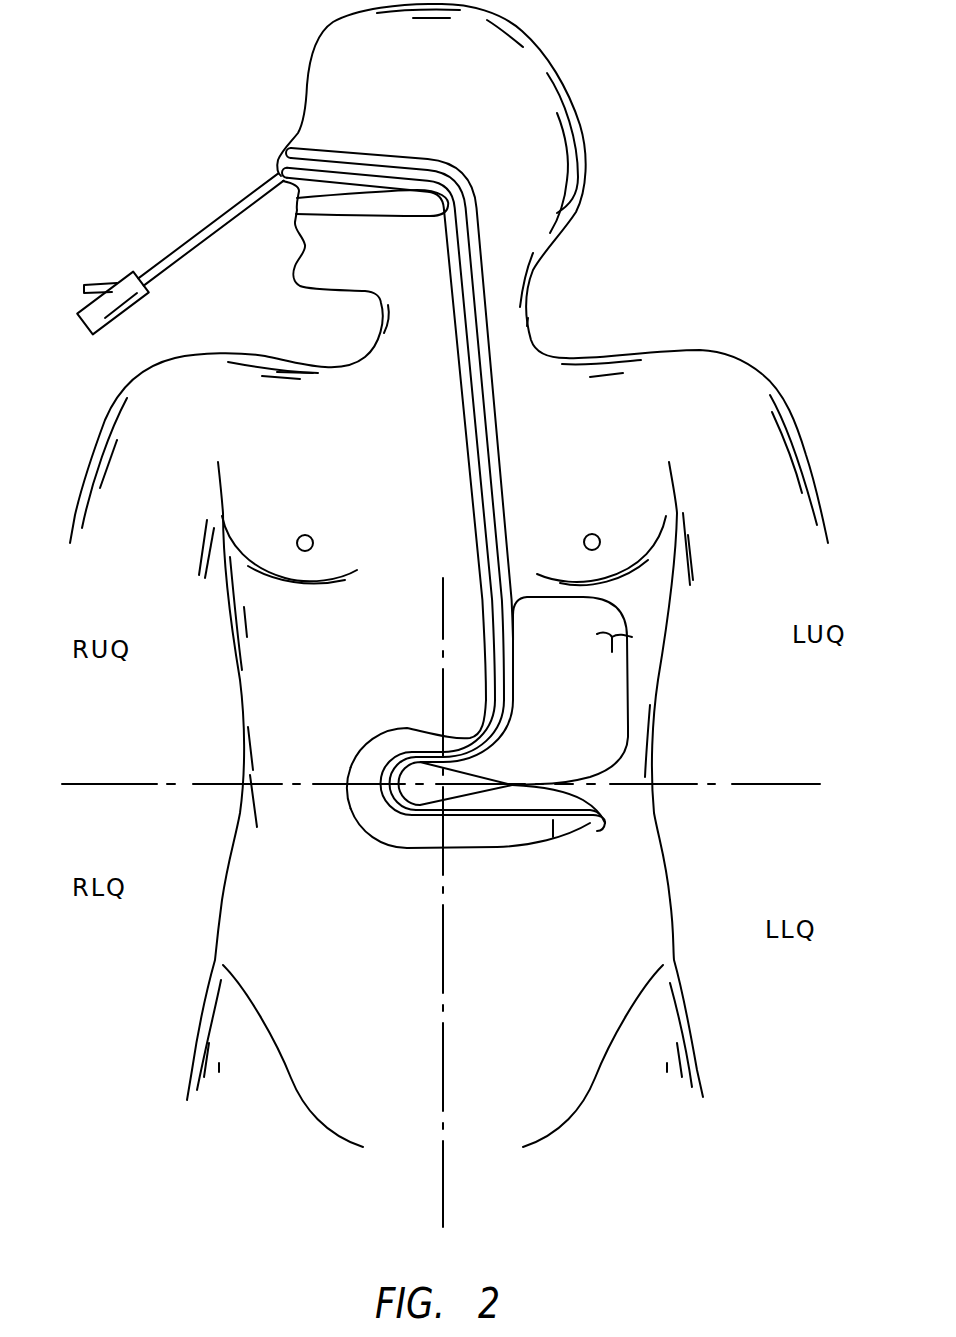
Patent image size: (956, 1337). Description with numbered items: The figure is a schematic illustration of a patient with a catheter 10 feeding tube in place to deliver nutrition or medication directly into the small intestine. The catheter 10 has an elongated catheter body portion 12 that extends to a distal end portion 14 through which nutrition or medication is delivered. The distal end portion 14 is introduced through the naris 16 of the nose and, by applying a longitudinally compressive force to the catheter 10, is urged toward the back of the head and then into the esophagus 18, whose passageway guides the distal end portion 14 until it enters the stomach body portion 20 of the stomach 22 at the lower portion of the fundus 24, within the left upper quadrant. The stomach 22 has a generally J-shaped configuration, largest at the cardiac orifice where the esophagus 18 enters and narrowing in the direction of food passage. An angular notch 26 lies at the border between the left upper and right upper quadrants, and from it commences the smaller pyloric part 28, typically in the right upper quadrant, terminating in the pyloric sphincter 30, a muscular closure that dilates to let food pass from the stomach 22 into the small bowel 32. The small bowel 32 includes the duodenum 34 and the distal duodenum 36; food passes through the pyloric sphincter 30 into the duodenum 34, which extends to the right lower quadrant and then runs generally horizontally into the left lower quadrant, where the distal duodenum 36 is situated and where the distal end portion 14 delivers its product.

The catheter 10 is at (111, 274).
The catheter body portion 12 is at (472, 409).
The distal end portion 14 is at (485, 811).
The naris 16 is at (279, 172).
The esophagus 18 is at (490, 474).
The stomach body portion 20 is at (610, 726).
The stomach 22 is at (628, 673).
The fundus 24 is at (632, 637).
The angular notch 26 is at (478, 750).
The pyloric part 28 is at (385, 726).
The pyloric sphincter 30 is at (390, 765).
The small bowel 32 is at (348, 801).
The duodenum 34 is at (360, 823).
The distal duodenum 36 is at (535, 836).